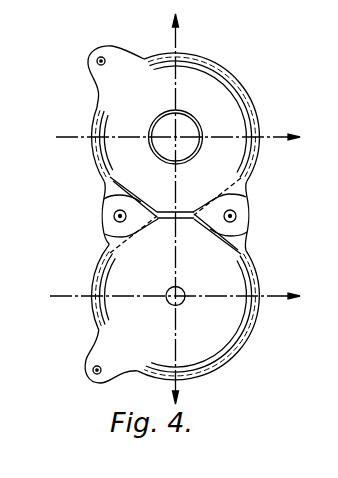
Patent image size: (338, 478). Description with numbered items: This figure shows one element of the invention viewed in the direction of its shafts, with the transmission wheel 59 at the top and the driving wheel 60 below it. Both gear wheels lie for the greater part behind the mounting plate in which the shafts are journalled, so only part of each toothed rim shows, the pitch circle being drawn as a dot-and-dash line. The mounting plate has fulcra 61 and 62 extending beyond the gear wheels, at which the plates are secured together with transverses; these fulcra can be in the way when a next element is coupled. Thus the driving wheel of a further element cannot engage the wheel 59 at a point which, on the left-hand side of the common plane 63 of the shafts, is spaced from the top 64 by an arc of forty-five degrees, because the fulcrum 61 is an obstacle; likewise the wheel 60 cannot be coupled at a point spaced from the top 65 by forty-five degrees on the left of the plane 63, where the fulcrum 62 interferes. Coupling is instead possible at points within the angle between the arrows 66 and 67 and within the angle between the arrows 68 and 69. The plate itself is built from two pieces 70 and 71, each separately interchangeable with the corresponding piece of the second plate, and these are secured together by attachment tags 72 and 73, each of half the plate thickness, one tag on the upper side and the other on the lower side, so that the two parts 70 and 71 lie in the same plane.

The transmission wheel 59 is at (210, 62).
The driving wheel 60 is at (235, 353).
The fulcrum 61 is at (96, 57).
The fulcrum 62 is at (86, 371).
The common plane of the shafts 63 is at (176, 89).
The top of the transmission wheel 64 is at (176, 53).
The top of the driving wheel 65 is at (170, 381).
The arrow 66 is at (179, 43).
The arrow 67 is at (278, 141).
The arrow 68 is at (275, 296).
The arrow 69 is at (177, 381).
The plate piece 70 is at (228, 116).
The plate piece 71 is at (215, 327).
The attachment tag 72 is at (105, 216).
The attachment tag 73 is at (240, 216).